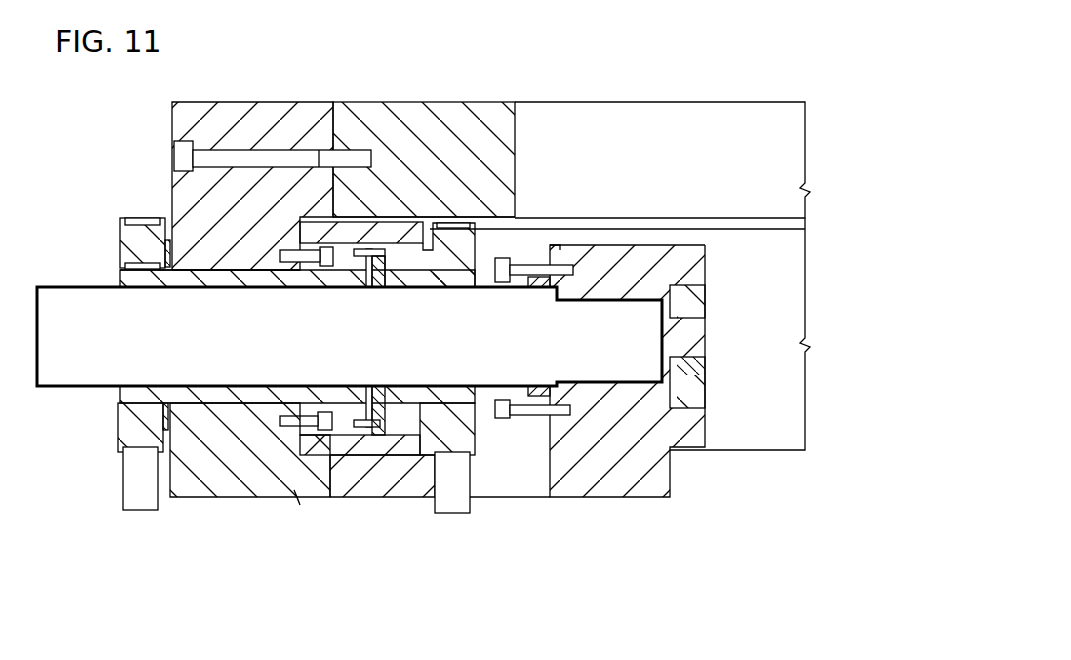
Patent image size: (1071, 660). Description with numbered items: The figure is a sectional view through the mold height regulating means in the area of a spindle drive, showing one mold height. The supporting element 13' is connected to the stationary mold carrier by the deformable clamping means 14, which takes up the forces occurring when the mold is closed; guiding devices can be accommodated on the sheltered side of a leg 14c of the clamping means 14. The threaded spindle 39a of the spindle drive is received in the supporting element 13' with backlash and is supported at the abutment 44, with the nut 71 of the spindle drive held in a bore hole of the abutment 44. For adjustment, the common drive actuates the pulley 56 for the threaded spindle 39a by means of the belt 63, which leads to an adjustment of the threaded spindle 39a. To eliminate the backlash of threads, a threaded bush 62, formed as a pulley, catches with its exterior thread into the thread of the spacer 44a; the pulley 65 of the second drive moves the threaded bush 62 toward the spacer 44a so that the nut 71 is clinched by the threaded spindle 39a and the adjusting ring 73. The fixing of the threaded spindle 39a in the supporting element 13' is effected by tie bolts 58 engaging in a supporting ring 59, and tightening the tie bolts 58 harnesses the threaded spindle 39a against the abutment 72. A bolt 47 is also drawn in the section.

The clamping means 14 is at (420, 138).
The leg of the clamping means 14c is at (713, 173).
The supporting element 13' is at (680, 401).
The threaded spindle 39a is at (405, 350).
The abutment 44 is at (303, 123).
The spacer 44a is at (378, 433).
The bolt 47 is at (243, 163).
The pulley 56 is at (133, 242).
The tie bolt 58 is at (533, 268).
The supporting ring 59 is at (515, 415).
The threaded bush 62 is at (456, 431).
The belt 63 is at (137, 495).
The pulley 65 is at (446, 483).
The nut 71 is at (212, 395).
The abutment 72 is at (550, 420).
The adjusting ring 73 is at (367, 440).